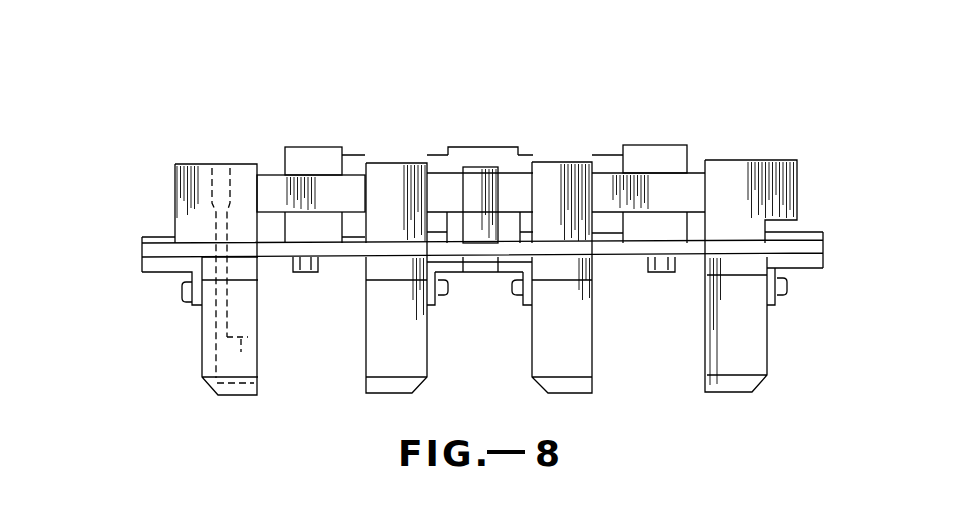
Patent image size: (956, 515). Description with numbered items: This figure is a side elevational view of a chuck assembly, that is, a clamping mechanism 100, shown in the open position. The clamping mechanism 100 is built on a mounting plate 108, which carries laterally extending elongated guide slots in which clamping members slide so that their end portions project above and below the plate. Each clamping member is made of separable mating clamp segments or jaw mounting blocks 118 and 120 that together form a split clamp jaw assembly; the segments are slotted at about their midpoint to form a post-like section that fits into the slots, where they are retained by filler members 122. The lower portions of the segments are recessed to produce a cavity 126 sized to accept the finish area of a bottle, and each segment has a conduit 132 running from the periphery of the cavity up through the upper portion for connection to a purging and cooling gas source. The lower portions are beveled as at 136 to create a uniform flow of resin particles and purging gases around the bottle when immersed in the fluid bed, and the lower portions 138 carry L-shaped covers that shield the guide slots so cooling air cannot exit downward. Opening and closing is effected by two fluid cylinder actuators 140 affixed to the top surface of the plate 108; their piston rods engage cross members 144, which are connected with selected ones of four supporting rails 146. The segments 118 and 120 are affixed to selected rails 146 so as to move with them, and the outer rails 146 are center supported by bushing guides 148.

The clamping mechanism 100 is at (216, 99).
The mounting plate 108 is at (826, 246).
The jaw mounting block 118 is at (422, 355).
The jaw mounting block 120 is at (212, 357).
The filler member 122 is at (151, 237).
The cavity 126 is at (241, 352).
The conduit 132 is at (213, 302).
The bevel 136 is at (422, 388).
The lower portion 138 is at (153, 275).
The fluid cylinder actuator 140 is at (396, 155).
The cross member 144 is at (784, 160).
The supporting rail 146 is at (272, 200).
The bushing guide 148 is at (478, 167).